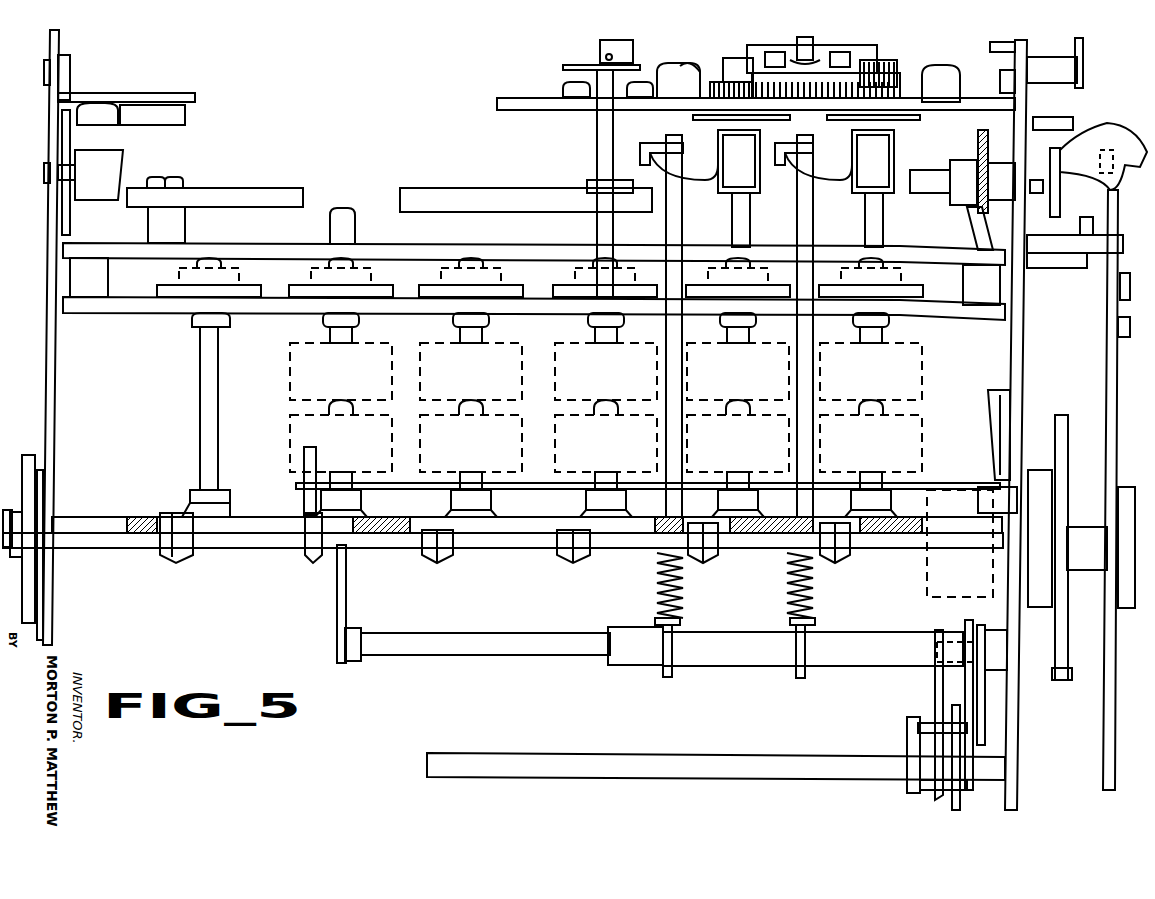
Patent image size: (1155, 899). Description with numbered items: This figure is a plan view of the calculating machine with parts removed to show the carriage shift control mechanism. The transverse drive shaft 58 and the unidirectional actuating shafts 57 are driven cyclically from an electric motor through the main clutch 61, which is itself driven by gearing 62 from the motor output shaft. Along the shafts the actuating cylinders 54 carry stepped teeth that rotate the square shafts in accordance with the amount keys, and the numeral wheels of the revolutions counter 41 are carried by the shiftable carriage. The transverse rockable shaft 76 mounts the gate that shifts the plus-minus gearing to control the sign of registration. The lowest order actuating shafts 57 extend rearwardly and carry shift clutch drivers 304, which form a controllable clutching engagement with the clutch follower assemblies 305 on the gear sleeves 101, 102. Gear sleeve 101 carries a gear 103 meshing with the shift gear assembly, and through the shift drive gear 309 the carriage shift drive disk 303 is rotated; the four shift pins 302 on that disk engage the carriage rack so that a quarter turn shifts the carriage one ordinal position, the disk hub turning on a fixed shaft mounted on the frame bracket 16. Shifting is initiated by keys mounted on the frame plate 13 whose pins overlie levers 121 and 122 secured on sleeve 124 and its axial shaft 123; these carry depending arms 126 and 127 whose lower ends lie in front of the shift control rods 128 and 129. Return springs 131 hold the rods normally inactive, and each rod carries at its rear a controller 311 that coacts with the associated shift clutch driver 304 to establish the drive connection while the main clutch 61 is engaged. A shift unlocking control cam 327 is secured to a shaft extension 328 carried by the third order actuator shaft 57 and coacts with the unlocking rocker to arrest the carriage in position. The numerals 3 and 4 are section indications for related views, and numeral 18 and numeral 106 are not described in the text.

The shift unlocking control cam 327 is at (563, 67).
The shaft extension 328 is at (597, 157).
The frame bracket 16 is at (548, 105).
The clutch follower assembly 305 is at (703, 117).
The gear 103 is at (712, 82).
The gear sleeve 101 is at (728, 62).
The carriage shift drive disk 303 is at (757, 48).
The shift pin 302 is at (870, 66).
The shift drive gear 309 is at (808, 48).
The gear sleeve 102 is at (875, 68).
The roller 106 is at (920, 72).
The shift control rod 128 is at (668, 233).
The shift control rod 129 is at (800, 233).
The shift controller 311 is at (650, 145).
The shift clutch driver 304 is at (725, 178).
The transverse rockable shaft 76 is at (935, 180).
The actuating shaft 57 is at (480, 340).
The actuating cylinder 54 is at (292, 388).
The revolutions counter 41 is at (578, 515).
The shaft 18 is at (782, 535).
The transverse drive shaft 58 is at (545, 548).
The shaft 123 is at (550, 640).
The sleeve 124 is at (868, 633).
The return spring 131 is at (657, 585).
The depending arm 126 is at (667, 676).
The depending arm 127 is at (800, 678).
The lever 121 is at (970, 695).
The lever 122 is at (985, 735).
The frame plate 13 is at (1017, 705).
The gearing 62 is at (1063, 415).
The main clutch 61 is at (1040, 465).
The section line 3- 3 is at (1105, 377).
The section line 4- 4 is at (777, 495).